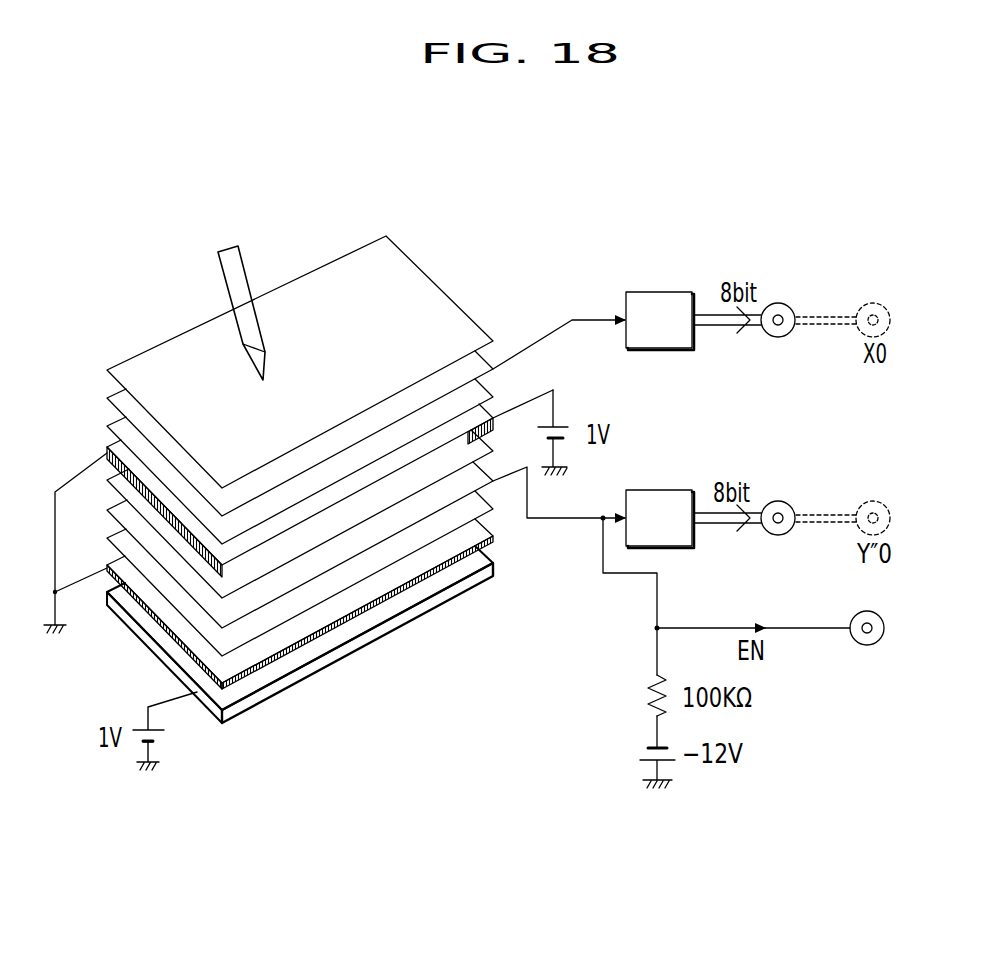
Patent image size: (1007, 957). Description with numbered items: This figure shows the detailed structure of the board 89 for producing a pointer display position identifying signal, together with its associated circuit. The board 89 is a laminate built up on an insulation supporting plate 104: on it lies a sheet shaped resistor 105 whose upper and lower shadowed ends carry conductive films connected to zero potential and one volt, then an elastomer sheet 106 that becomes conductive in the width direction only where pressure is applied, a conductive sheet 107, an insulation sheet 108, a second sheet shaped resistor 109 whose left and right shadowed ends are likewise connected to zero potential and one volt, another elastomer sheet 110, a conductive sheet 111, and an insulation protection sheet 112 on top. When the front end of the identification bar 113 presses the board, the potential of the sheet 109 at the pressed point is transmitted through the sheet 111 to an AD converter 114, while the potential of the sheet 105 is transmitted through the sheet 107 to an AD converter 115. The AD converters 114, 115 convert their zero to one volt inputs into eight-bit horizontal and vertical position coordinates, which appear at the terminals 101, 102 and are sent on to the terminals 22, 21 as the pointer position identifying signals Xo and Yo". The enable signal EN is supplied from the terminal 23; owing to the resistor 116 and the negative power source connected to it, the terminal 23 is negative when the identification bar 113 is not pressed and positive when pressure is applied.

The board for producing a pointer display position signal 89 is at (203, 760).
The terminal 101 is at (780, 303).
The terminal 102 is at (778, 501).
The terminal for receiving pointer position identifying signal Yo" 21 is at (873, 501).
The terminal for receiving pointer position identifying signal Xo 22 is at (873, 303).
The pointer enable signal input terminal 23 is at (858, 614).
The insulation supporting plate 104 is at (238, 680).
The sheet shaped resistor 105 is at (265, 640).
The elastomer sheet 106 is at (280, 607).
The conductive sheet 107 is at (298, 572).
The insulation sheet 108 is at (313, 537).
The sheet shaped resistor 109 is at (330, 503).
The elastomer sheet 110 is at (337, 468).
The conductive sheet 111 is at (342, 432).
The insulation protection sheet 112 is at (345, 382).
The identification bar 113 is at (247, 272).
The AD converter 114 is at (650, 291).
The AD converter 115 is at (657, 488).
The resistor 116 is at (648, 704).